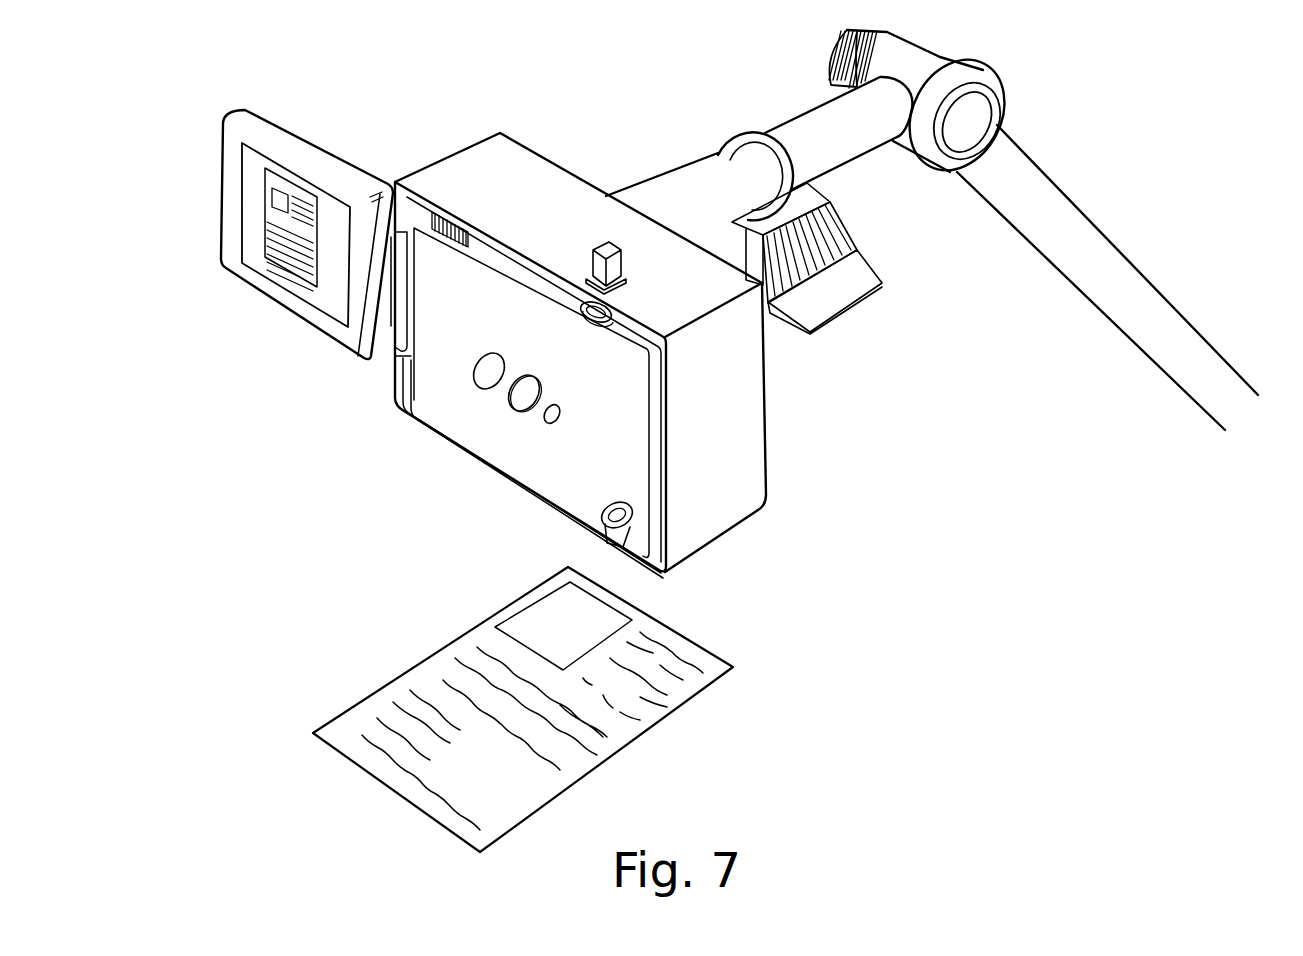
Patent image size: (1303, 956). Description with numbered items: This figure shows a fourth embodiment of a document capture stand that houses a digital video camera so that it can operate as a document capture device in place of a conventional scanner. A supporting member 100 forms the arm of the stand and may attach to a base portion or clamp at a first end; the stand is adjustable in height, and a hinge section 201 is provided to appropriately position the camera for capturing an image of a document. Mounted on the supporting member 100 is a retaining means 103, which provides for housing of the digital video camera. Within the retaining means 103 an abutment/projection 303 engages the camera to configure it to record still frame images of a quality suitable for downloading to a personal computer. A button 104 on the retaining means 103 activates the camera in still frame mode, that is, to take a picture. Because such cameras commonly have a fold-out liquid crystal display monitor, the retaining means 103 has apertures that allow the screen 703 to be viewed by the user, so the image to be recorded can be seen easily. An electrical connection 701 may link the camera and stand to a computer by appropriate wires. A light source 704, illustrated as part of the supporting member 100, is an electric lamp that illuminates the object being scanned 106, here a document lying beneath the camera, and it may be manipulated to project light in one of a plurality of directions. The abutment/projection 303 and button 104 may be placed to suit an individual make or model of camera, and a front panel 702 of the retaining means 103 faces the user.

The supporting member 100 is at (1097, 257).
The hinge section 201 is at (990, 85).
The retaining means 103 is at (737, 362).
The button 104 is at (607, 243).
The object being scanned 106 is at (708, 652).
The abutment/projection 303 is at (610, 508).
The electrical connection 701 is at (443, 212).
The front panel 702 is at (607, 457).
The screen 703 is at (332, 318).
The light source 704 is at (850, 243).